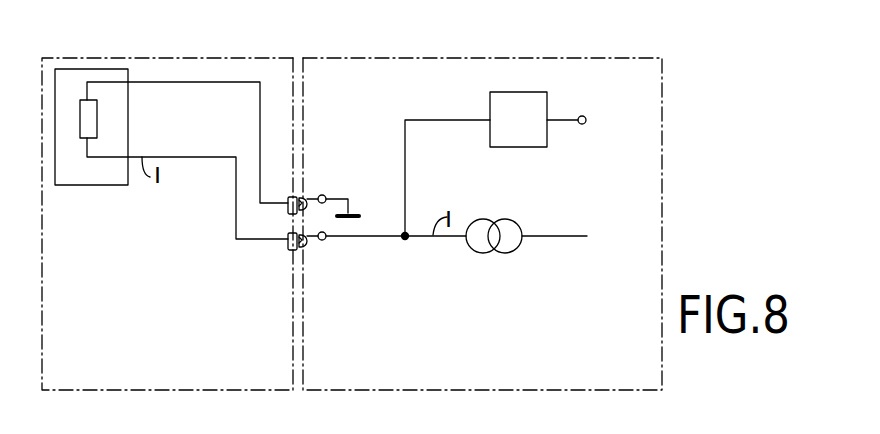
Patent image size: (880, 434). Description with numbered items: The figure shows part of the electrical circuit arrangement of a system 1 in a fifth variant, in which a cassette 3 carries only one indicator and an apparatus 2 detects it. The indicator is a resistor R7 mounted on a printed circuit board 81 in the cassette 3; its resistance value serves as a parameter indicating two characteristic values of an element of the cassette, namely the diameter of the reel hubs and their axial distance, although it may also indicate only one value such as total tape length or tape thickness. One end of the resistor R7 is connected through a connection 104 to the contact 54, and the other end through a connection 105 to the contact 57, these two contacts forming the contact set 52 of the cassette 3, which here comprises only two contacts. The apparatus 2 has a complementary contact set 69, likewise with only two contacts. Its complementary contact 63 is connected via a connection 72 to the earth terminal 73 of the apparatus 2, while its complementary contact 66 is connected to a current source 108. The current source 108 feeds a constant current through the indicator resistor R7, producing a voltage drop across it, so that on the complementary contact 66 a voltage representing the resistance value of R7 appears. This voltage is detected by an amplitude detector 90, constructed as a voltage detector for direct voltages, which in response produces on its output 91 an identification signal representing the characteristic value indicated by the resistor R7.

The system 1 is at (297, 57).
The apparatus 2 is at (573, 58).
The cassette 3 is at (177, 58).
The contact set 52 is at (264, 242).
The contact 54 is at (288, 203).
The contact 57 is at (290, 251).
The complementary contact 63 is at (306, 201).
The complementary contact 66 is at (306, 243).
The complementary contact set 69 is at (328, 242).
The connection 72 is at (327, 196).
The earth terminal 73 is at (358, 210).
The printed circuit board 81 is at (97, 177).
The amplitude detector 90 is at (493, 95).
The output 91 is at (582, 116).
The connection 104 is at (170, 83).
The connection 105 is at (175, 157).
The current source 108 is at (507, 252).
The resistor R7 is at (92, 118).